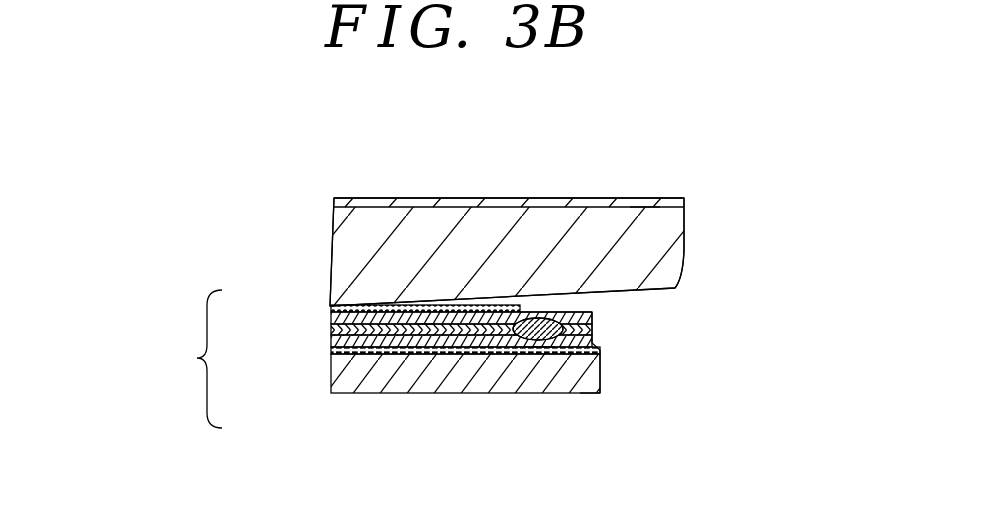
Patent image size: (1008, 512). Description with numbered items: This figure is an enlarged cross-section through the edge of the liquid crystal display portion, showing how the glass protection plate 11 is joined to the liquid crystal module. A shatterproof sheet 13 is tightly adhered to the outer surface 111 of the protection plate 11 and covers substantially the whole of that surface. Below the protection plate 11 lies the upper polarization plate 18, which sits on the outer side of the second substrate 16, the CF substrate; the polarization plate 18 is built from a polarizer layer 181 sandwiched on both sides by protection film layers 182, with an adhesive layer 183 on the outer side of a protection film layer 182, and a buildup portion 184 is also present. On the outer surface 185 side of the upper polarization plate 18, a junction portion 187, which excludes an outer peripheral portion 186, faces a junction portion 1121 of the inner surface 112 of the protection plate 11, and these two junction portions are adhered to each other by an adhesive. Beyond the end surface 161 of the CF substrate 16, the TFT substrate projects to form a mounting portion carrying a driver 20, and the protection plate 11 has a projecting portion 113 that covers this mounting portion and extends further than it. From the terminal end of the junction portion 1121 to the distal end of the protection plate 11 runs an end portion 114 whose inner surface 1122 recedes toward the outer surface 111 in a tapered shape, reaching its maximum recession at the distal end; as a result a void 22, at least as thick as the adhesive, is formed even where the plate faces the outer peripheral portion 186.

The protection plate 11 is at (592, 218).
The outer surface 111 is at (335, 218).
The inner surface 112 is at (335, 270).
The junction portion 1121 is at (335, 242).
The inner surface of end portion 1122 is at (675, 289).
The projecting portion 113 is at (673, 242).
The end portion 114 is at (643, 215).
The shatterproof sheet 13 is at (667, 213).
The driver 20 is at (440, 305).
The void 22 is at (545, 311).
The upper polarization plate 18 is at (376, 358).
The polarizer layer 181 is at (331, 328).
The protection film layer 182 is at (331, 318).
The adhesive layer 183 is at (331, 352).
The buildup portion 184 is at (540, 346).
The outer surface 185 is at (582, 309).
The outer peripheral portion 186 is at (597, 393).
The junction portion 187 is at (425, 326).
The second substrate 16 is at (343, 394).
The end surface 161 is at (600, 373).